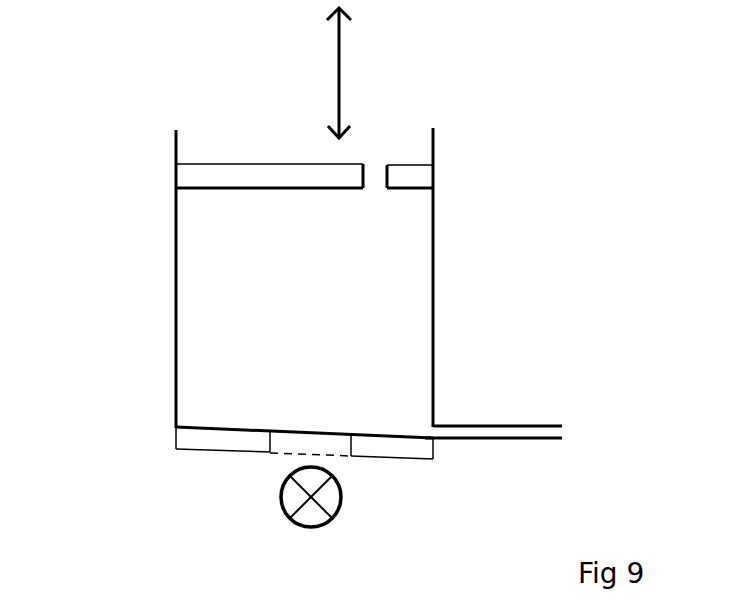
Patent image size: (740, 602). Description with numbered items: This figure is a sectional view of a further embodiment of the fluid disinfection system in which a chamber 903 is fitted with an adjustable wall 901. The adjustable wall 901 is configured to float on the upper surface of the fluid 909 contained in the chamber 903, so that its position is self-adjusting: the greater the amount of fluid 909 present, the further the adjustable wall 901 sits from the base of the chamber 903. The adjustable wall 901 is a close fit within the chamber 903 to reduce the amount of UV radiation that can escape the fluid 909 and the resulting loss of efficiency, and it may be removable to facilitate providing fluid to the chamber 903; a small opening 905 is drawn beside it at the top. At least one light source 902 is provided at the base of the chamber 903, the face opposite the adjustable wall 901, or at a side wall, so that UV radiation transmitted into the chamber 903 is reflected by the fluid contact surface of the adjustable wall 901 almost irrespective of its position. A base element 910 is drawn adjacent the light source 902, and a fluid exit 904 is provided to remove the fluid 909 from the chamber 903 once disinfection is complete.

The adjustable wall 901 is at (250, 176).
The light source 902 is at (270, 495).
The chamber 903 is at (167, 290).
The fluid exit 904 is at (527, 410).
The gap / opening in lid 905 is at (380, 153).
The fluid 909 is at (397, 250).
The bottom plate with window 910 is at (337, 457).